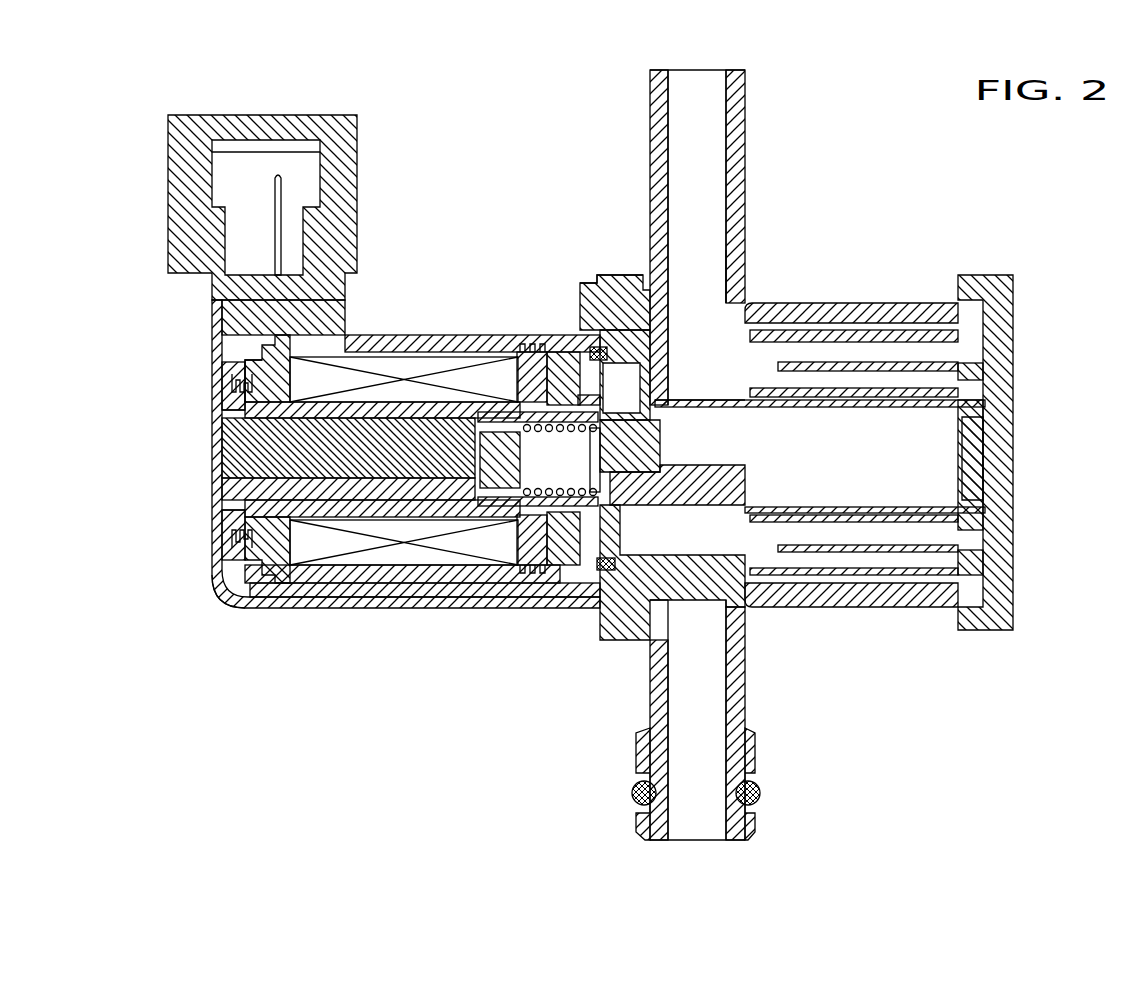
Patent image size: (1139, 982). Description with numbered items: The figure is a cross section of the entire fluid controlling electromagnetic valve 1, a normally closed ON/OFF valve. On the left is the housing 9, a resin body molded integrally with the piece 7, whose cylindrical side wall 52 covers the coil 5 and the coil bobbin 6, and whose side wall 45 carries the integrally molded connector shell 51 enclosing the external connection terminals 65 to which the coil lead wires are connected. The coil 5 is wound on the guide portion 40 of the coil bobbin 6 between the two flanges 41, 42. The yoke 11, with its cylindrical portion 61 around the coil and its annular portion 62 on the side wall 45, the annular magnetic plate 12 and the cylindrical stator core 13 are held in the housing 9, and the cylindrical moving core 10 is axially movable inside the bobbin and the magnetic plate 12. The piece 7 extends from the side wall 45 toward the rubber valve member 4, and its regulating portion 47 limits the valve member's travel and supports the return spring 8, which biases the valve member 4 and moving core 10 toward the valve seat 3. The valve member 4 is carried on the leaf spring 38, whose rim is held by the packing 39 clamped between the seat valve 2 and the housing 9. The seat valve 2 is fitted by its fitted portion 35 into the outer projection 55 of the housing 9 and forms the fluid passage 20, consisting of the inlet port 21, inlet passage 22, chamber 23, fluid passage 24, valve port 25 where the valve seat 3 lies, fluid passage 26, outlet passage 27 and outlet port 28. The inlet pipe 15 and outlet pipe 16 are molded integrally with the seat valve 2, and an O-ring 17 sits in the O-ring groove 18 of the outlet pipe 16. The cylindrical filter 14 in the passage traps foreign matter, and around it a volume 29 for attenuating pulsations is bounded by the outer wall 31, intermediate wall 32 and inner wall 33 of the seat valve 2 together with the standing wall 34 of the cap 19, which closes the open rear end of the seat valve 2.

The fluid controlling electromagnetic valve 1 is at (425, 135).
The seat valve 2 is at (650, 160).
The valve seat 3 is at (625, 480).
The valve member 4 is at (608, 575).
The coil 5 is at (318, 548).
The coil bobbin 6 is at (258, 360).
The piece 7 is at (296, 460).
The return spring 8 is at (525, 385).
The housing 9 is at (265, 608).
The moving core 10 is at (548, 465).
The yoke 11 is at (228, 598).
The magnetic plate 12 is at (565, 555).
The stator core 13 is at (237, 492).
The filter 14 is at (945, 405).
The inlet pipe 15 is at (740, 145).
The outlet pipe 16 is at (735, 655).
The O-ring 17 is at (762, 790).
The O-ring groove 18 is at (632, 793).
The cap 19 is at (1000, 340).
The fluid passage 20 is at (728, 262).
The inlet port 21 is at (705, 78).
The inlet passage 22 is at (700, 195).
The chamber 23 is at (890, 460).
The fluid passage 24 is at (657, 447).
The valve port 25 is at (640, 452).
The fluid passage 26 is at (590, 600).
The outlet passage 27 is at (700, 720).
The outlet port 28 is at (710, 838).
The volume 29 is at (975, 565).
The outer wall 31 is at (827, 312).
The intermediate wall 32 is at (858, 340).
The inner wall 33 is at (912, 390).
The standing wall 34 is at (790, 362).
The fitted portion 35 is at (613, 290).
The leaf spring 38 is at (582, 395).
The packing 39 is at (590, 345).
The guide portion 40 is at (373, 405).
The flange 41 is at (270, 367).
The flange 42 is at (552, 378).
The side wall 45 is at (222, 405).
The regulating portion 47 is at (560, 497).
The connector shell 51 is at (330, 172).
The cylindrical side wall 52 is at (405, 572).
The outer projection 55 is at (600, 330).
The cylindrical portion 61 is at (350, 590).
The annular portion 62 is at (230, 385).
The external connection terminals 65 is at (283, 235).